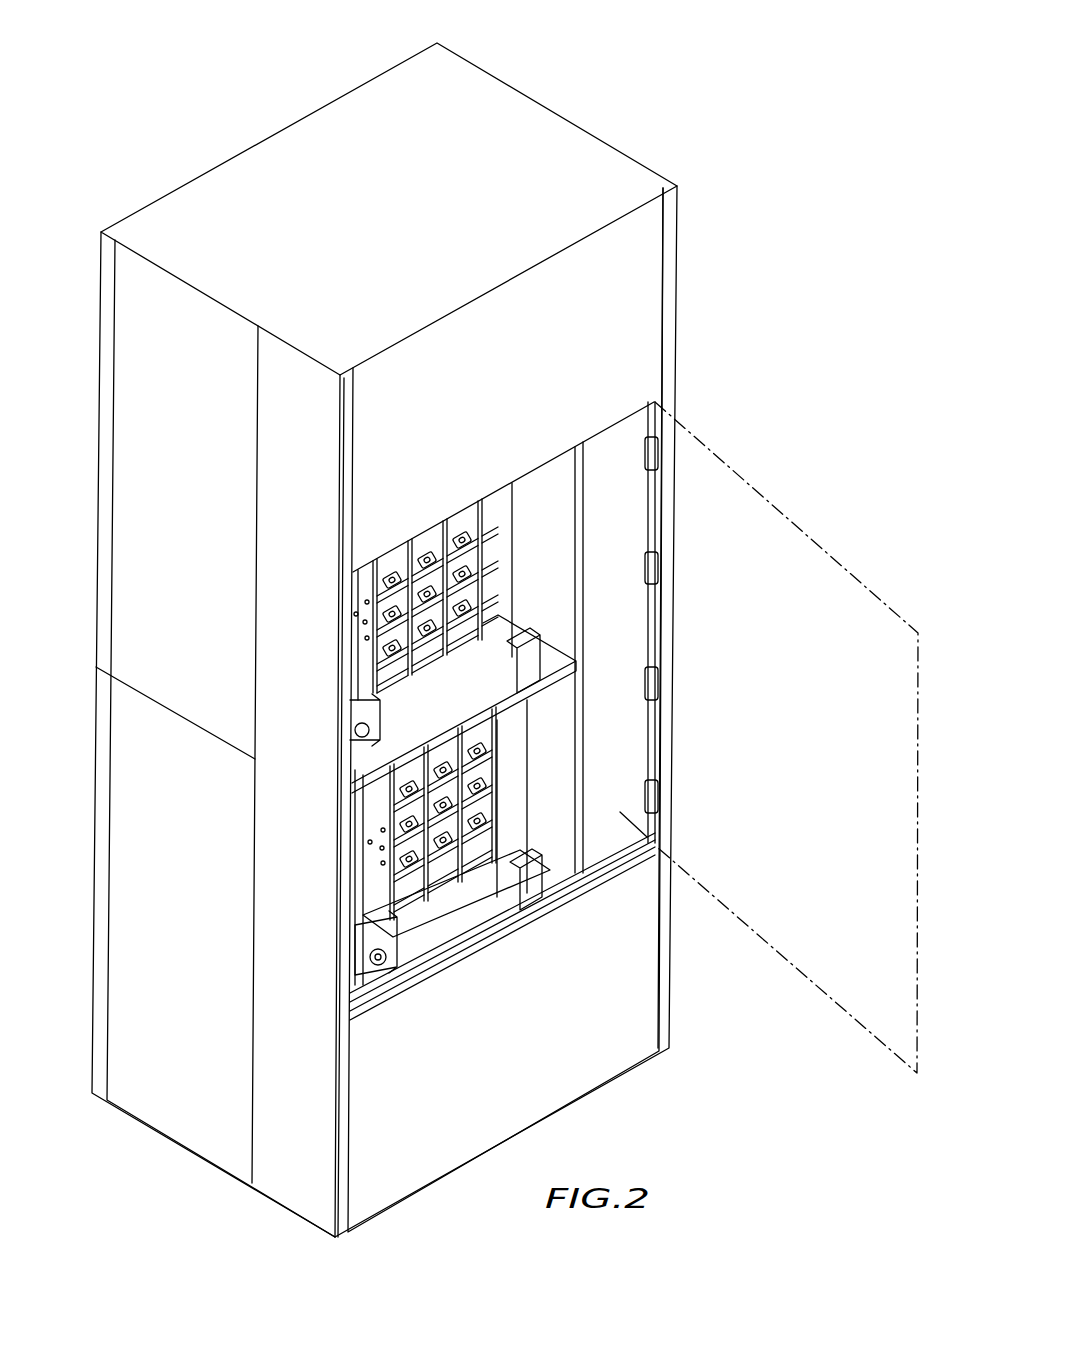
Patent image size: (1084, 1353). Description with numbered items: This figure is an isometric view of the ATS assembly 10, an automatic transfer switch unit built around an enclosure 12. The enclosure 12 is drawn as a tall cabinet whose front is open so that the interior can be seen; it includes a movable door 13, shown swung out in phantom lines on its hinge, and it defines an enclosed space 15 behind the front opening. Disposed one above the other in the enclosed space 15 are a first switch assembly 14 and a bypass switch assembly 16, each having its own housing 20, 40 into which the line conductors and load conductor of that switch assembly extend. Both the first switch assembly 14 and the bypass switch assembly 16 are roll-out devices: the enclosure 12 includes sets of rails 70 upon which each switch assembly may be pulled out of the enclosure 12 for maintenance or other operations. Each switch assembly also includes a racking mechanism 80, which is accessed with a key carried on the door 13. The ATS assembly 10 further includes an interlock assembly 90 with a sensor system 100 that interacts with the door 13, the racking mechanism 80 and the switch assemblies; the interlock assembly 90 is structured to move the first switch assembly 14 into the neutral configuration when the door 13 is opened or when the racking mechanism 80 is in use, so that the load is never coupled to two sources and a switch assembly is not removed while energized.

The ATS assembly 10 is at (708, 97).
The enclosure 12 is at (652, 238).
The door 13 is at (752, 487).
The first switch assembly 14 is at (482, 800).
The enclosed space 15 is at (560, 568).
The bypass switch assembly 16 is at (470, 585).
The housing 20 is at (445, 533).
The housing 40 is at (435, 898).
The rails 70 is at (545, 660).
The racking mechanism 80 is at (393, 1010).
The interlock assembly 90 is at (187, 167).
The sensor system 100 is at (130, 305).